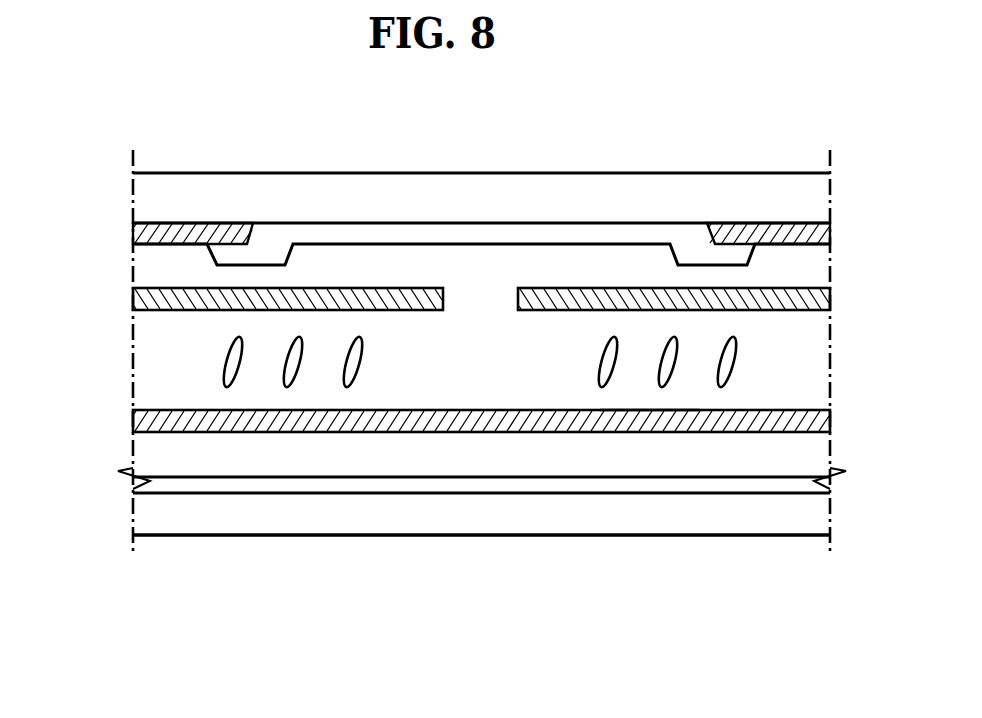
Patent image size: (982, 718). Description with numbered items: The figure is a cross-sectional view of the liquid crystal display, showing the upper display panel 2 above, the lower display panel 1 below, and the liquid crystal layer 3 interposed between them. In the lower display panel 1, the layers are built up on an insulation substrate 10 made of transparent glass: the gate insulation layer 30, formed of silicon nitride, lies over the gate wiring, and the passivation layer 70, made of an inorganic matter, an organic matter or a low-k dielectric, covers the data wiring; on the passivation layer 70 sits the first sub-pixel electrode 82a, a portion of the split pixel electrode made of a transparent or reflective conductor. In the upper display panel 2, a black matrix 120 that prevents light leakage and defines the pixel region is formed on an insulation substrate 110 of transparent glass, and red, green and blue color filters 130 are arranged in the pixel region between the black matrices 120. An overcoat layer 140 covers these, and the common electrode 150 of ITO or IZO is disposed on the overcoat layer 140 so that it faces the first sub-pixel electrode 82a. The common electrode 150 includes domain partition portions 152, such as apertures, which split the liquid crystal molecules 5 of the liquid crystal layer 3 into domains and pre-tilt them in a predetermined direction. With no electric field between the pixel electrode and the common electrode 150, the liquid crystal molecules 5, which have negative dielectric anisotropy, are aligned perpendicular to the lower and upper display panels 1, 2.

The lower display panel 1 is at (122, 412).
The upper display panel 2 is at (122, 175).
The liquid crystal layer 3 is at (120, 355).
The liquid crystal molecules 5 is at (737, 360).
The insulation substrate 10 is at (290, 517).
The gate insulation layer 30 is at (363, 485).
The passivation layer 70 is at (480, 458).
The first sub-pixel electrode 82a is at (648, 427).
The insulation substrate 110 is at (260, 213).
The black matrix 120 is at (196, 234).
The color filters 130 is at (515, 235).
The overcoat layer 140 is at (648, 262).
The common electrode 150 is at (390, 293).
The domain partition portions 152 is at (479, 306).